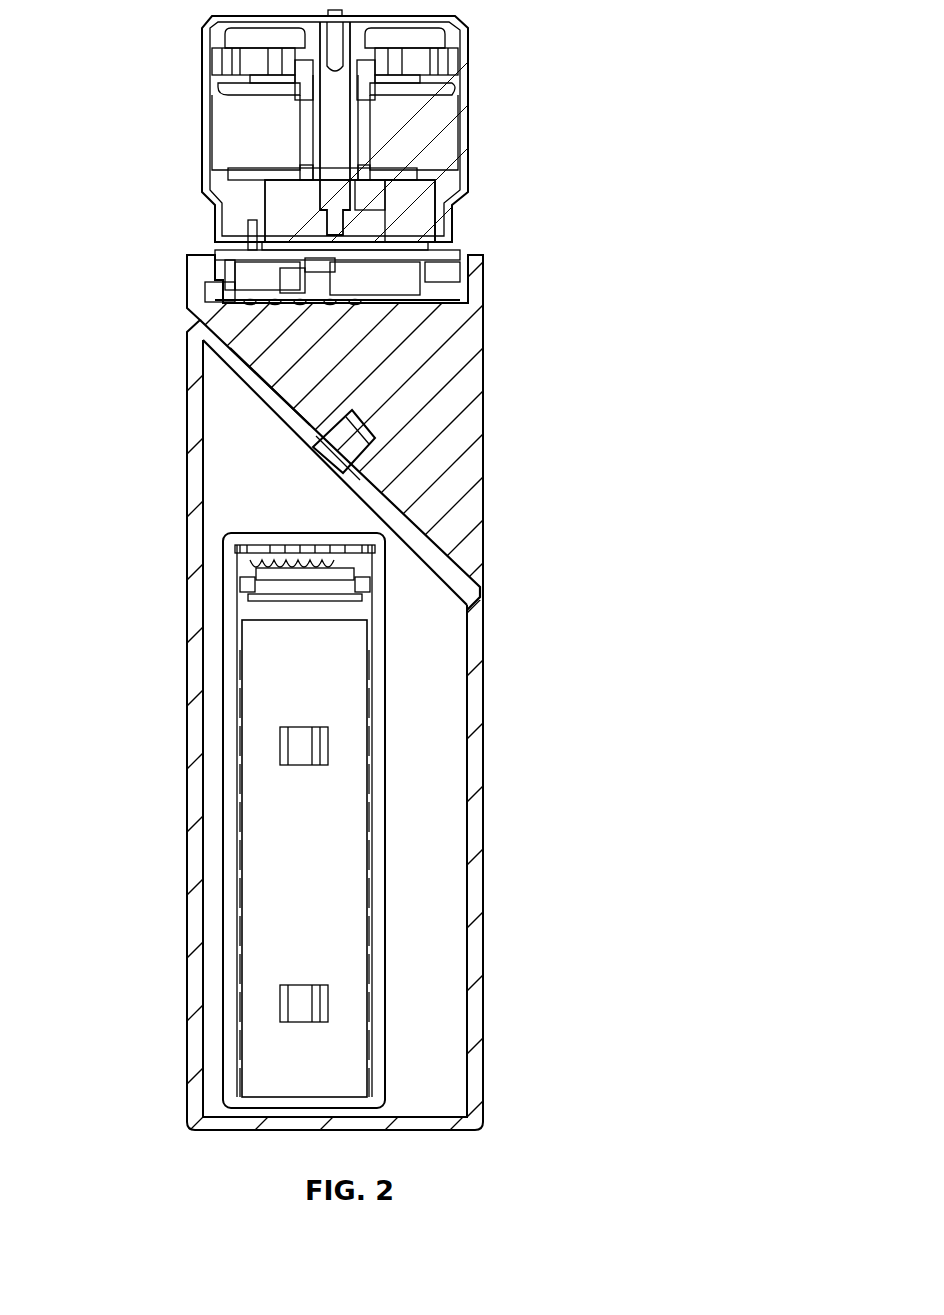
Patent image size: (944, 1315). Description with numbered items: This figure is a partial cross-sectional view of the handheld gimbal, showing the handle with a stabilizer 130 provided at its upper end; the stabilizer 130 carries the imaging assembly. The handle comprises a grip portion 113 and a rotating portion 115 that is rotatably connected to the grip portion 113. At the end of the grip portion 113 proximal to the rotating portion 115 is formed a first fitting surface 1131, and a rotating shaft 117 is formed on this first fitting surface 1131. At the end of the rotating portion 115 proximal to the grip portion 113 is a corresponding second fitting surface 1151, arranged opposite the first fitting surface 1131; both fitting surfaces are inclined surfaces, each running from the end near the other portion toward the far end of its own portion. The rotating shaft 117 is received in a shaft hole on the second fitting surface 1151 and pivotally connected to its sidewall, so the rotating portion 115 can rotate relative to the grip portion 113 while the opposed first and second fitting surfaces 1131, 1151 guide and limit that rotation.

The grip portion 113 is at (483, 880).
The first fitting surface 1131 is at (280, 403).
The rotating portion 115 is at (422, 385).
The second fitting surface 1151 is at (417, 532).
The rotating shaft 117 is at (357, 440).
The stabilizer 130 is at (470, 140).